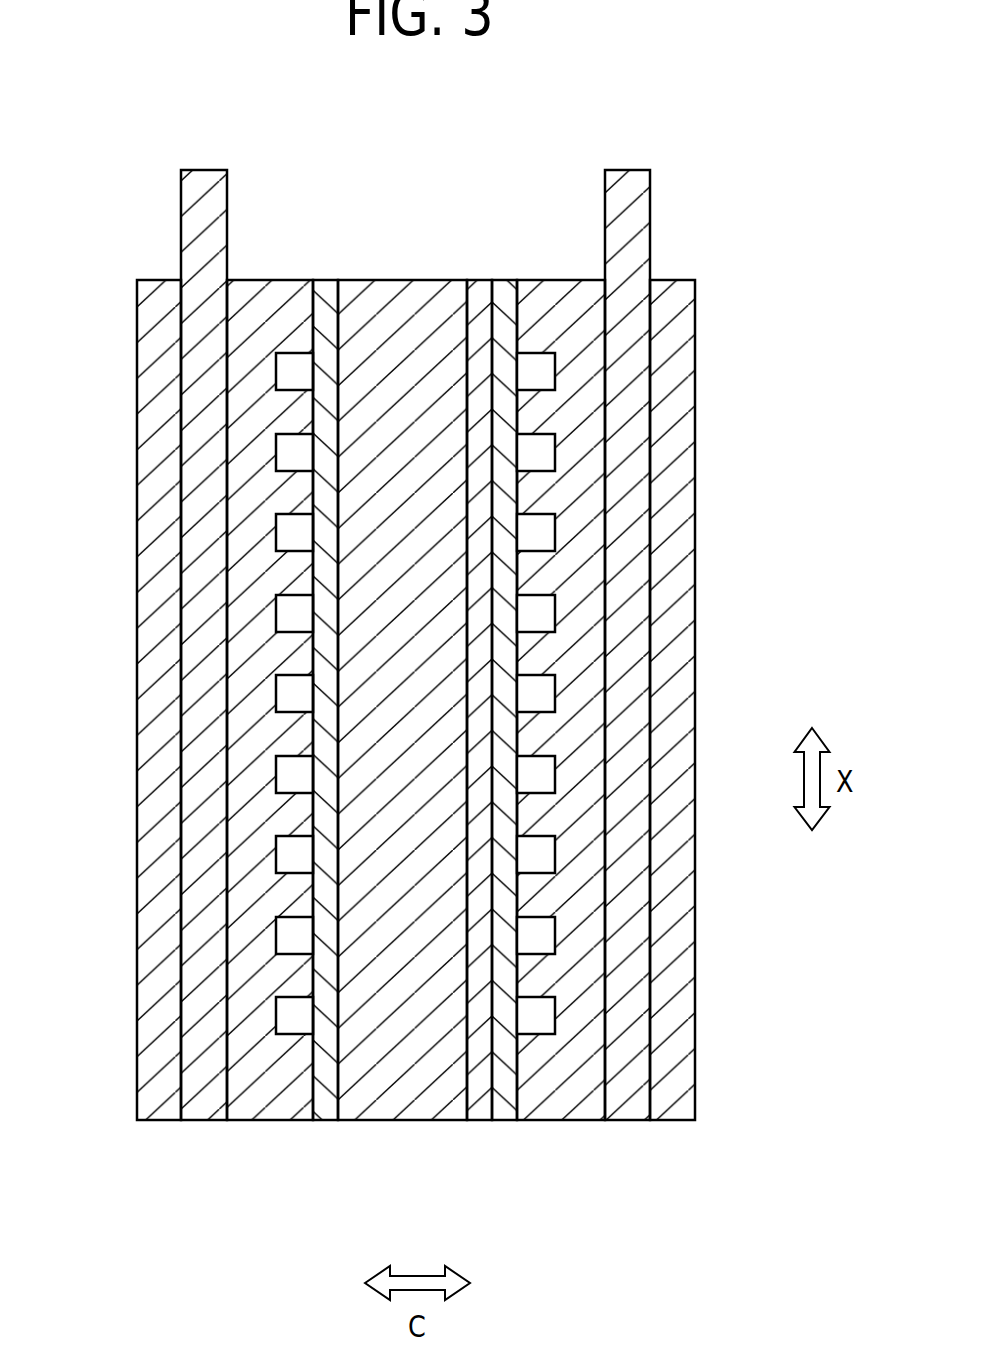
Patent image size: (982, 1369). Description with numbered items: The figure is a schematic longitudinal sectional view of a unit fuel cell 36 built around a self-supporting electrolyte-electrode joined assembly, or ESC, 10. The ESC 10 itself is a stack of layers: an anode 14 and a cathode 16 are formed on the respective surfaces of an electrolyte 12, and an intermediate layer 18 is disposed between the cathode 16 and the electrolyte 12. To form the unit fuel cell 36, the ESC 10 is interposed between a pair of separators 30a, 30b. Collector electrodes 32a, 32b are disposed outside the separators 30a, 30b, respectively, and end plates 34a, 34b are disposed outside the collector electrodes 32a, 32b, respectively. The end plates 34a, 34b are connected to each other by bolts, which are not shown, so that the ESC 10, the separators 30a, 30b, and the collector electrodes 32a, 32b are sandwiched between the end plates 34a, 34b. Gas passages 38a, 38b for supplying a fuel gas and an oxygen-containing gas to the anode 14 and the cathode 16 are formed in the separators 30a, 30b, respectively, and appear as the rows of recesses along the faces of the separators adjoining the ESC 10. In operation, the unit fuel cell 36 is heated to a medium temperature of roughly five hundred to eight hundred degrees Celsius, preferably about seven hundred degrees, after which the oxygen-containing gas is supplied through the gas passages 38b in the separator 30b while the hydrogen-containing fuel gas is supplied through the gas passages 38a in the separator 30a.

The self-supporting electrolyte-electrode joined assembly 10 is at (415, 765).
The electrolyte 12 is at (398, 1106).
The anode 14 is at (328, 1106).
The cathode 16 is at (511, 735).
The intermediate layer 18 is at (483, 1106).
The separator 30a is at (263, 318).
The separator 30b is at (568, 320).
The collector electrode 32a is at (198, 222).
The collector electrode 32b is at (620, 207).
The end plate 34a is at (152, 507).
The end plate 34b is at (677, 505).
The unit fuel cell 36 is at (598, 140).
The gas passages 38a is at (290, 373).
The gas passages 38b is at (542, 372).